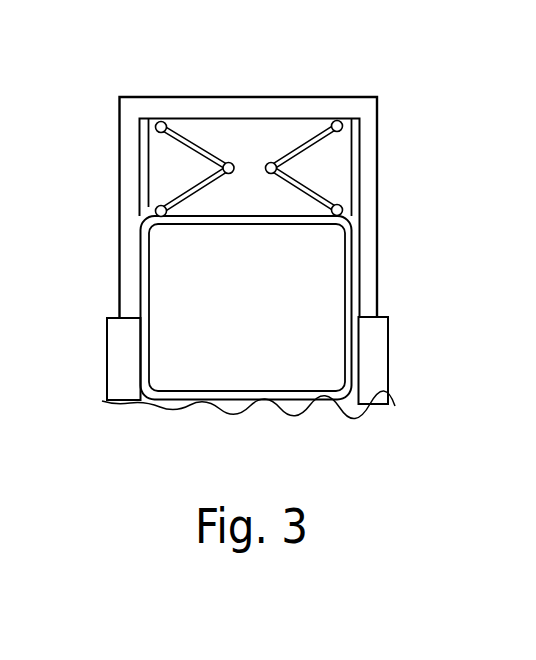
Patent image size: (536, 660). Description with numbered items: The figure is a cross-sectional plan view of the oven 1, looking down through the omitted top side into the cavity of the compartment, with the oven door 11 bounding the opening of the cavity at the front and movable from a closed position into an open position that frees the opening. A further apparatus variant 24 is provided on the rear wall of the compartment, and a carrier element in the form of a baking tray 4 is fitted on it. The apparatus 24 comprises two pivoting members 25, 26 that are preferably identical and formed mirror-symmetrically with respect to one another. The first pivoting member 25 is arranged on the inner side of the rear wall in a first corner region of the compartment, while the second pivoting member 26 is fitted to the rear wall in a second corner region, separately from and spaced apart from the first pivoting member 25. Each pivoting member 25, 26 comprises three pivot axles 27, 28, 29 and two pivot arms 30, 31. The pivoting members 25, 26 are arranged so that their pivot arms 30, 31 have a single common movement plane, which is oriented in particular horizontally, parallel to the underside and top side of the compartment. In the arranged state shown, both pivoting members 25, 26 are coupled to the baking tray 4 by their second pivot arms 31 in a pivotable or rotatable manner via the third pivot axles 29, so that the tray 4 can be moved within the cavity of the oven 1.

The oven 1 is at (113, 430).
The baking tray 4 is at (233, 363).
The oven door 11 is at (130, 368).
The apparatus variant 24 is at (249, 130).
The first pivoting member 25 is at (186, 122).
The second pivoting member 26 is at (288, 134).
The first pivot axle 27 is at (140, 127).
The second pivot axle 28 is at (198, 164).
The third pivot axle 29 is at (140, 211).
The first pivot arm 30 is at (223, 165).
The second pivot arm 31 is at (200, 176).